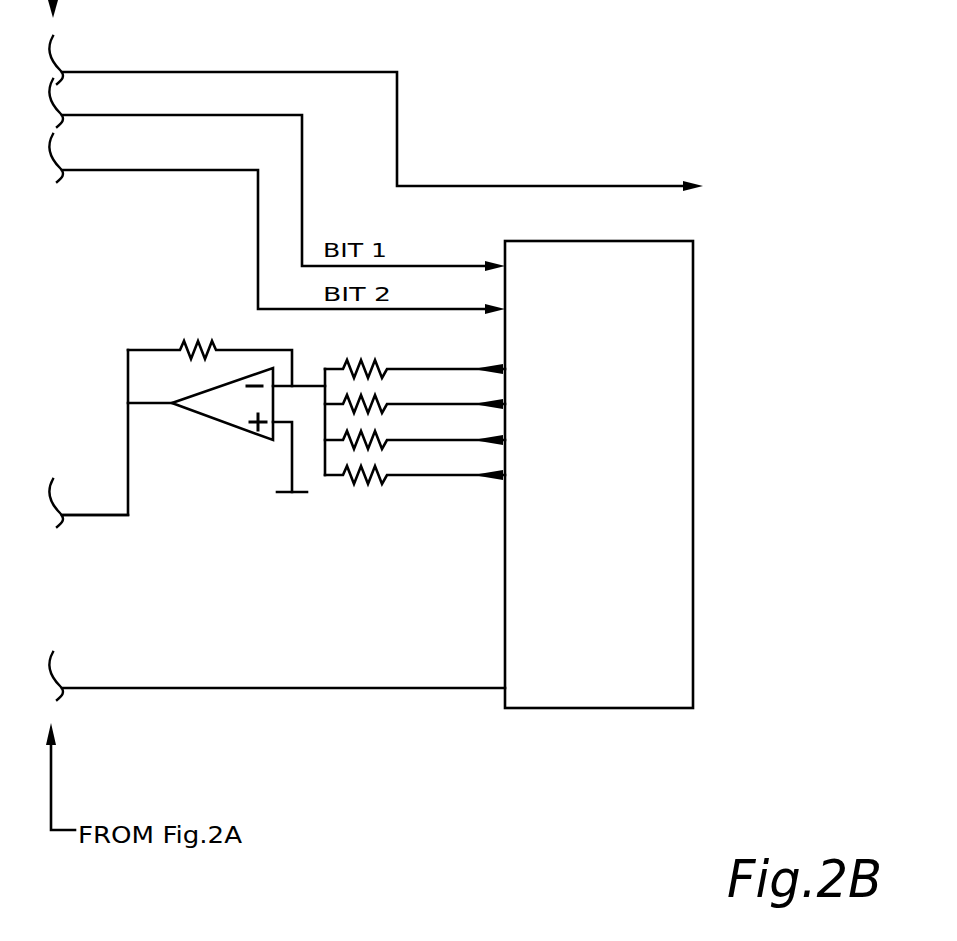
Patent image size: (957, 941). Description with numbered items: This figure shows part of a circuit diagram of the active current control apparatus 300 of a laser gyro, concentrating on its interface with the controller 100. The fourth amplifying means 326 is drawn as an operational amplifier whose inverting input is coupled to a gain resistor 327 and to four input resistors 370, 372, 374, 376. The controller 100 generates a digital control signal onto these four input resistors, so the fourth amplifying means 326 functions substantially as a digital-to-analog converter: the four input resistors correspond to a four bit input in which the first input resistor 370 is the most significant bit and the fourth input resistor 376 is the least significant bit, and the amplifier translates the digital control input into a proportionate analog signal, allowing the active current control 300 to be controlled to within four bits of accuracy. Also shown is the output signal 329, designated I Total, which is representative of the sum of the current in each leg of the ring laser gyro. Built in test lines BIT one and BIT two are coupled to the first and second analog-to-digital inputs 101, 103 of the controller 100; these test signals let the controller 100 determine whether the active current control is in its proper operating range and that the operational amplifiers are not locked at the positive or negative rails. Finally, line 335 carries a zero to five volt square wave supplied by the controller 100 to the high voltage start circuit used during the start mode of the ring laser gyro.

The controller 100 is at (599, 474).
The first analog-to-digital input 101 is at (573, 272).
The second analog-to-digital input 103 is at (573, 315).
The active current control apparatus 300 is at (213, 613).
The fourth amplifying means 326 is at (258, 443).
The gain resistor 327 is at (216, 346).
The output signal 329 is at (278, 70).
The line 335 is at (274, 688).
The first input resistor 370 is at (438, 366).
The second input resistor 372 is at (438, 401).
The third input resistor 374 is at (438, 437).
The fourth input resistor 376 is at (438, 472).